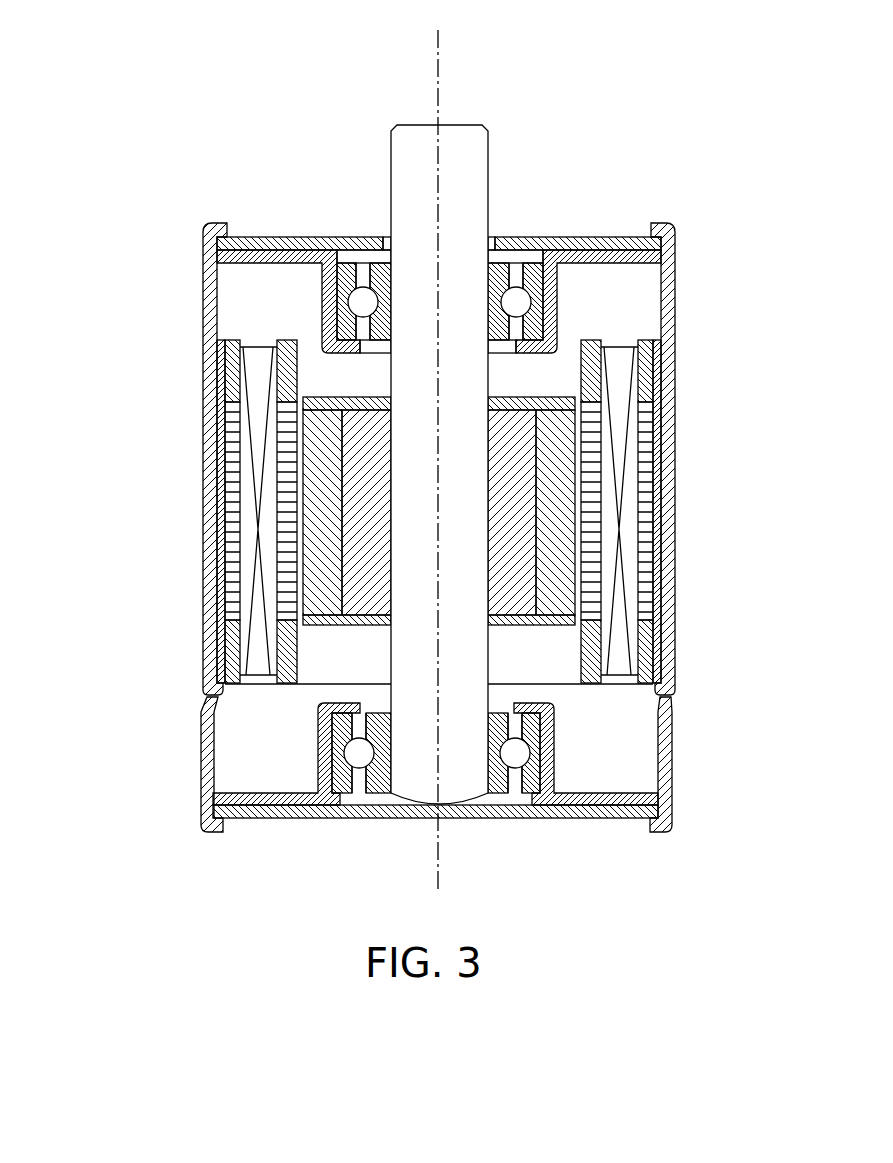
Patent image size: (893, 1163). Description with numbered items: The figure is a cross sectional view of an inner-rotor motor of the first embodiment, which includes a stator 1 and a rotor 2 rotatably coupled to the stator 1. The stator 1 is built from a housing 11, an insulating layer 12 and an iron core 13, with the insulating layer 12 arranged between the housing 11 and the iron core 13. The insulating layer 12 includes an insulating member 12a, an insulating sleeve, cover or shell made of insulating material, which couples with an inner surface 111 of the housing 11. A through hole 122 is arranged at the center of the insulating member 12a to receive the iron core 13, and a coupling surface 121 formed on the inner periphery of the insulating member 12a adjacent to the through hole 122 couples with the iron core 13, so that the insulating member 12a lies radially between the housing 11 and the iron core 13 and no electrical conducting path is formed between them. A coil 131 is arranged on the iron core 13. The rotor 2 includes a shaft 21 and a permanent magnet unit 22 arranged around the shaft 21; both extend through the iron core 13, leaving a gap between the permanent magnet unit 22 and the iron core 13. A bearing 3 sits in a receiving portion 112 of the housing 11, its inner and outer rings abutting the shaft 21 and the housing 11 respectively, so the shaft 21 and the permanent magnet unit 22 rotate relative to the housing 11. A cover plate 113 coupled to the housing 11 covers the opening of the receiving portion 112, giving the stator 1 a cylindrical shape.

The stator 1 is at (406, 471).
The rotor 2 is at (460, 419).
The shaft 21 is at (470, 193).
The permanent magnet unit 22 is at (569, 395).
The bearing 3 is at (377, 267).
The housing 11 is at (391, 527).
The inner surface 111 is at (225, 294).
The receiving portion 112 is at (342, 255).
The cover plate 113 is at (633, 240).
The insulating layer 12 is at (395, 410).
The insulating member 12a is at (217, 375).
The iron core 13 is at (237, 428).
The coupling surface 121 is at (238, 490).
The through hole 122 is at (307, 335).
The coil 131 is at (260, 353).